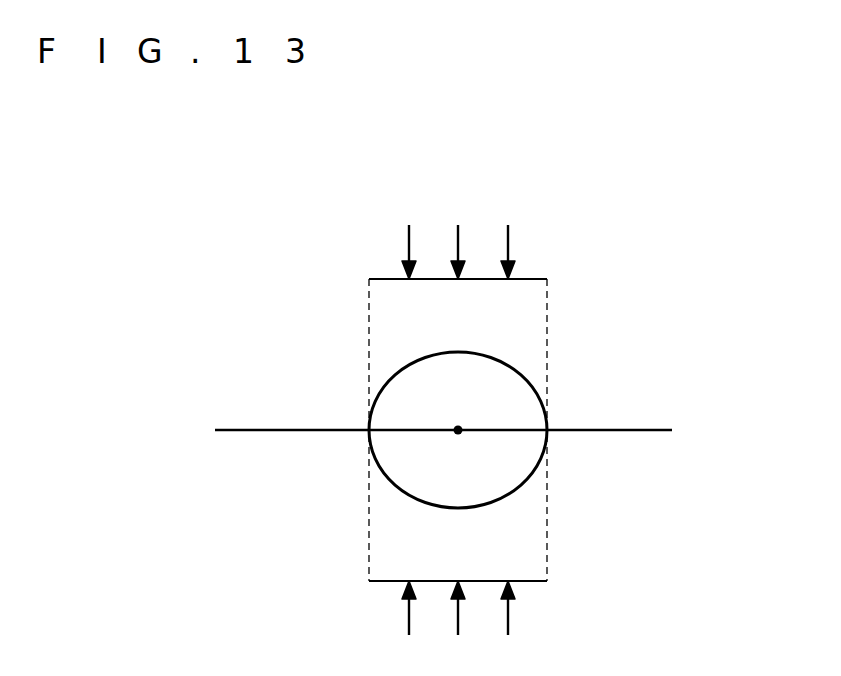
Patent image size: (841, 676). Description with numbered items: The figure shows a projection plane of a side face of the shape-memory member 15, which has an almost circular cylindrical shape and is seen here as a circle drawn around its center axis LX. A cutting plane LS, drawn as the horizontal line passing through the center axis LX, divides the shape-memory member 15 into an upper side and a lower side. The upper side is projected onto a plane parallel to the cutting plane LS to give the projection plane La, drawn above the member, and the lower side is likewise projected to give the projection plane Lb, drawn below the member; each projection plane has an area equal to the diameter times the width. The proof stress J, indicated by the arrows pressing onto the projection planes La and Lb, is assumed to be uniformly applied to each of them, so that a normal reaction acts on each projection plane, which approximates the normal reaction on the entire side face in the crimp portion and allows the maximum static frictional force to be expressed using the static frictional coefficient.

The proof stress J is at (458, 433).
The projection plane La is at (532, 279).
The projection plane Lb is at (532, 581).
The cutting plane LS is at (632, 430).
The center axis LX is at (461, 433).
The shape-memory member 15 is at (403, 463).